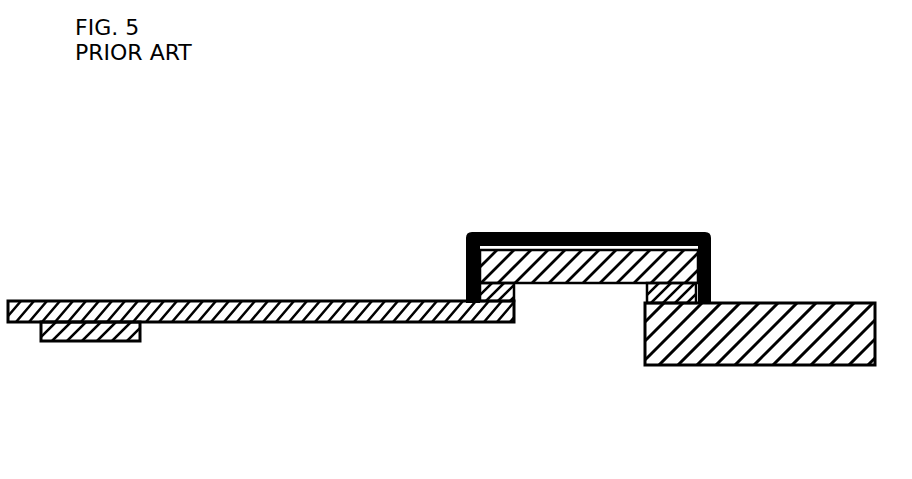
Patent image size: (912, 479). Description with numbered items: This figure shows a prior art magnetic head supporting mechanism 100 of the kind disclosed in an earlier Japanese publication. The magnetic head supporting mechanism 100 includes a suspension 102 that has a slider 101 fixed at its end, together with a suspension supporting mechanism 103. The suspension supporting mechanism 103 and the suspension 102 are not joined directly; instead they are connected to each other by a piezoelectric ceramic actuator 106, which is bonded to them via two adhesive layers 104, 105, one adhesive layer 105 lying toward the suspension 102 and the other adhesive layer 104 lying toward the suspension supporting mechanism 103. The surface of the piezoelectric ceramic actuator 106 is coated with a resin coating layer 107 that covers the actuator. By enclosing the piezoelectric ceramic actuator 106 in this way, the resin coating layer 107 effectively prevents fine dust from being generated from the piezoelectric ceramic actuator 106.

The magnetic head supporting mechanism 100 is at (722, 154).
The slider 101 is at (93, 342).
The suspension 102 is at (277, 300).
The suspension supporting mechanism 103 is at (777, 303).
The adhesive layer 104 is at (643, 295).
The adhesive layer 105 is at (518, 302).
The piezoelectric ceramic actuator 106 is at (571, 285).
The resin coating layer 107 is at (543, 232).